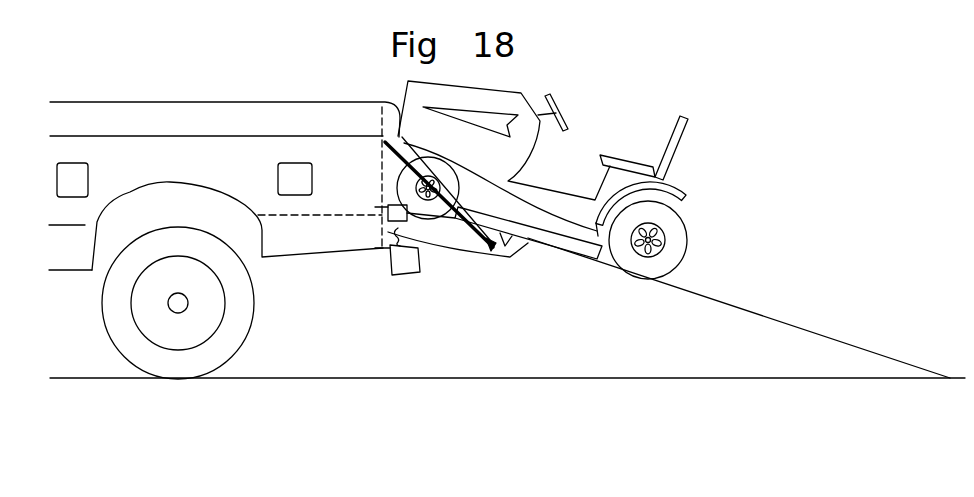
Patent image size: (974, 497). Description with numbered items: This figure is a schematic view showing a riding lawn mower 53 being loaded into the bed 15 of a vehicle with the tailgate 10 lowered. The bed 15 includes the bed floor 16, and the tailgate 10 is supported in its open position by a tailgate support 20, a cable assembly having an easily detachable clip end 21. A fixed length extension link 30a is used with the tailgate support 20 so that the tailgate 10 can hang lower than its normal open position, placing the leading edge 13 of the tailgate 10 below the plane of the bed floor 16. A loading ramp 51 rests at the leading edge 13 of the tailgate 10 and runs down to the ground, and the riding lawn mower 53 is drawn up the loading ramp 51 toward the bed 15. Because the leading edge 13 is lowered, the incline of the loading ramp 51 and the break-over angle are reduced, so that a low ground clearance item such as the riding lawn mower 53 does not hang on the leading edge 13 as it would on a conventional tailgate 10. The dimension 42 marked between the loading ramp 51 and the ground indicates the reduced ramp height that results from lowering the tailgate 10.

The bed 15 is at (182, 117).
The bed floor 16 is at (272, 220).
The riding lawn mower 53 is at (602, 117).
The clip end 21 is at (402, 137).
The fixed length extension link 30a is at (405, 131).
The tailgate support 20 is at (439, 171).
The leading edge 13 is at (532, 245).
The tailgate 10 is at (452, 250).
The loading ramp 51 is at (802, 332).
The ramp height dimension 42 is at (777, 323).